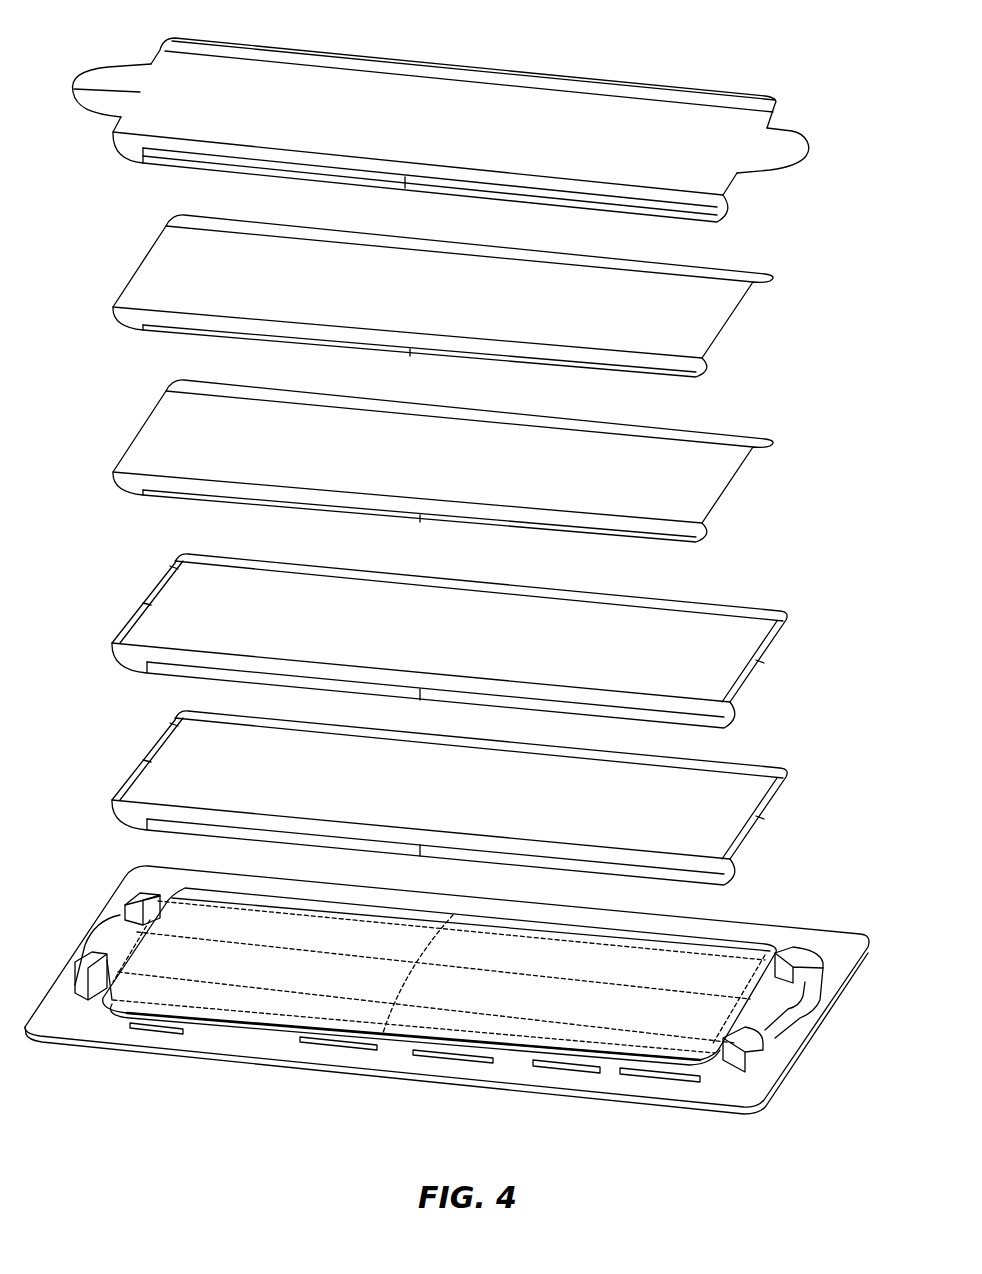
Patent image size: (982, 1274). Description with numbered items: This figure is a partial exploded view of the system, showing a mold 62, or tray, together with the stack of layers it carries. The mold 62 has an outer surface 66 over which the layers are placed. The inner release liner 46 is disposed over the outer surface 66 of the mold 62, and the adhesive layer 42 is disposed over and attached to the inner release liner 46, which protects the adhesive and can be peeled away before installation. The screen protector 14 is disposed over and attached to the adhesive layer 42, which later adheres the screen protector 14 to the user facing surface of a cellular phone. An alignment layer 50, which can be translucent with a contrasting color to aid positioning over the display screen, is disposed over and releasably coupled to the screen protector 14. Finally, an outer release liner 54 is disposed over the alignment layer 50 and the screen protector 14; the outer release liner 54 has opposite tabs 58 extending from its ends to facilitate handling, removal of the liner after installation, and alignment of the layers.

The outer release liner 54 is at (513, 102).
The opposite tabs 58 is at (93, 95).
The alignment layer 50 is at (172, 260).
The screen protector 14 is at (687, 473).
The adhesive layer 42 is at (167, 618).
The inner release liner 46 is at (730, 807).
The mold 62 is at (113, 1033).
The outer surface 66 is at (340, 983).